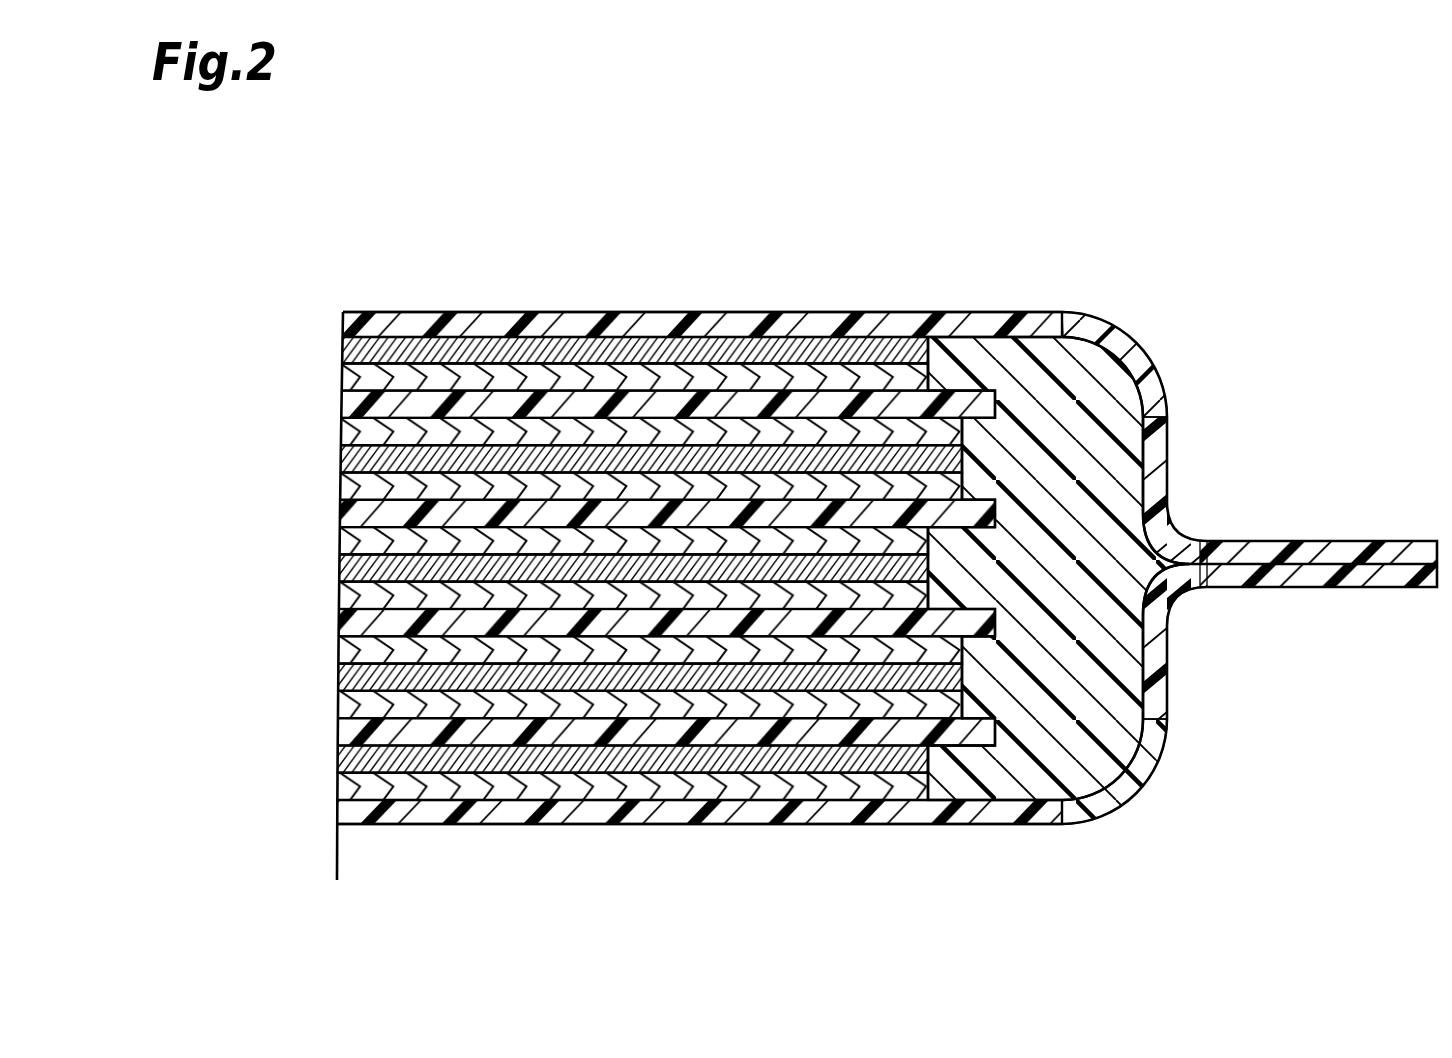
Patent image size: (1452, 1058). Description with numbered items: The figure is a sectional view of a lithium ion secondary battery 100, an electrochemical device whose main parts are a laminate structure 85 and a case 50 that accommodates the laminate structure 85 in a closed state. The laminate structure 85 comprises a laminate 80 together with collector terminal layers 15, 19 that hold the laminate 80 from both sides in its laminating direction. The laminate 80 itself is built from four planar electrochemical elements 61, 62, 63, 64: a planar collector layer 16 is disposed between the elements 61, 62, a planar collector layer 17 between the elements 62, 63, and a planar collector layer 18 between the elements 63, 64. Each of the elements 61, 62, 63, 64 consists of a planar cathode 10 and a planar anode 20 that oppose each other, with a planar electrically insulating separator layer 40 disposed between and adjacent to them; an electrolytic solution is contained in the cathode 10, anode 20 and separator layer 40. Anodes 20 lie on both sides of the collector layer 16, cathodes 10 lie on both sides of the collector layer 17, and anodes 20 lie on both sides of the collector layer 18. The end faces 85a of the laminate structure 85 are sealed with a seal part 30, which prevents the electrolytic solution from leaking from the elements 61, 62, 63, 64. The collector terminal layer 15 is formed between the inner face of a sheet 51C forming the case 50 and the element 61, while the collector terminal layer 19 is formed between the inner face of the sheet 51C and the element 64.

The lithium ion secondary battery 100 is at (936, 168).
The case 50 is at (947, 310).
The sheet 51C is at (495, 327).
The seal part 30 is at (1047, 715).
The end faces 85a is at (968, 703).
The laminate structure 85 is at (116, 335).
The laminate 80 is at (166, 383).
The element 61 is at (222, 362).
The element 62 is at (222, 470).
The element 63 is at (222, 582).
The element 64 is at (222, 690).
The cathode 10 is at (342, 376).
The anode 20 is at (342, 432).
The separator layer 40 is at (342, 404).
The collector terminal layer 15 is at (342, 350).
The collector layer 16 is at (342, 460).
The collector layer 17 is at (342, 569).
The collector layer 18 is at (342, 678).
The collector terminal layer 19 is at (342, 787).